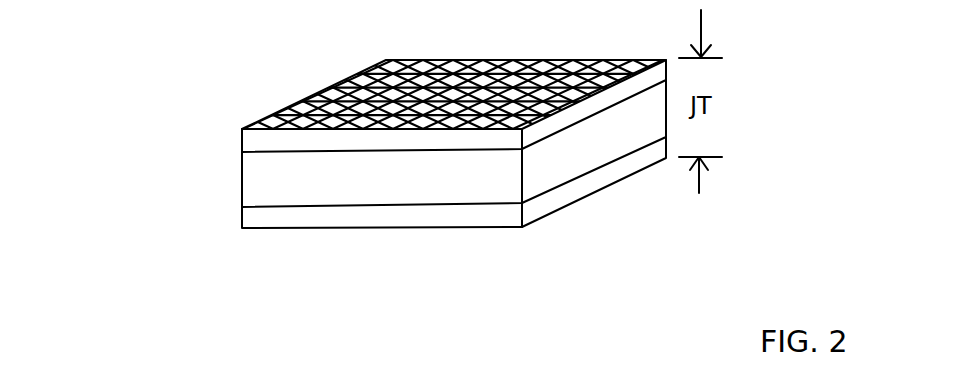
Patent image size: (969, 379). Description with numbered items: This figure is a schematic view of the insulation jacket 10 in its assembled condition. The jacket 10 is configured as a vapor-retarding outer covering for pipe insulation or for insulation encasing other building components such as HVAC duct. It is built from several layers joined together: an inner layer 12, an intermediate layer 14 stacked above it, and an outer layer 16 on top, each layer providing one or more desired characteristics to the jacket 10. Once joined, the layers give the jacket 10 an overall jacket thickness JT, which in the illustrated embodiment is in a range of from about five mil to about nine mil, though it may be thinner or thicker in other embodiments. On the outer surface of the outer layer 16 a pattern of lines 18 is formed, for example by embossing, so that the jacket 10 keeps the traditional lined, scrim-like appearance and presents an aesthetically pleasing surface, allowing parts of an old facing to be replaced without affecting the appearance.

The jacket 10 is at (124, 60).
The inner layer 12 is at (242, 218).
The intermediate layer 14 is at (242, 172).
The outer layer 16 is at (240, 143).
The pattern of lines 18 is at (310, 98).